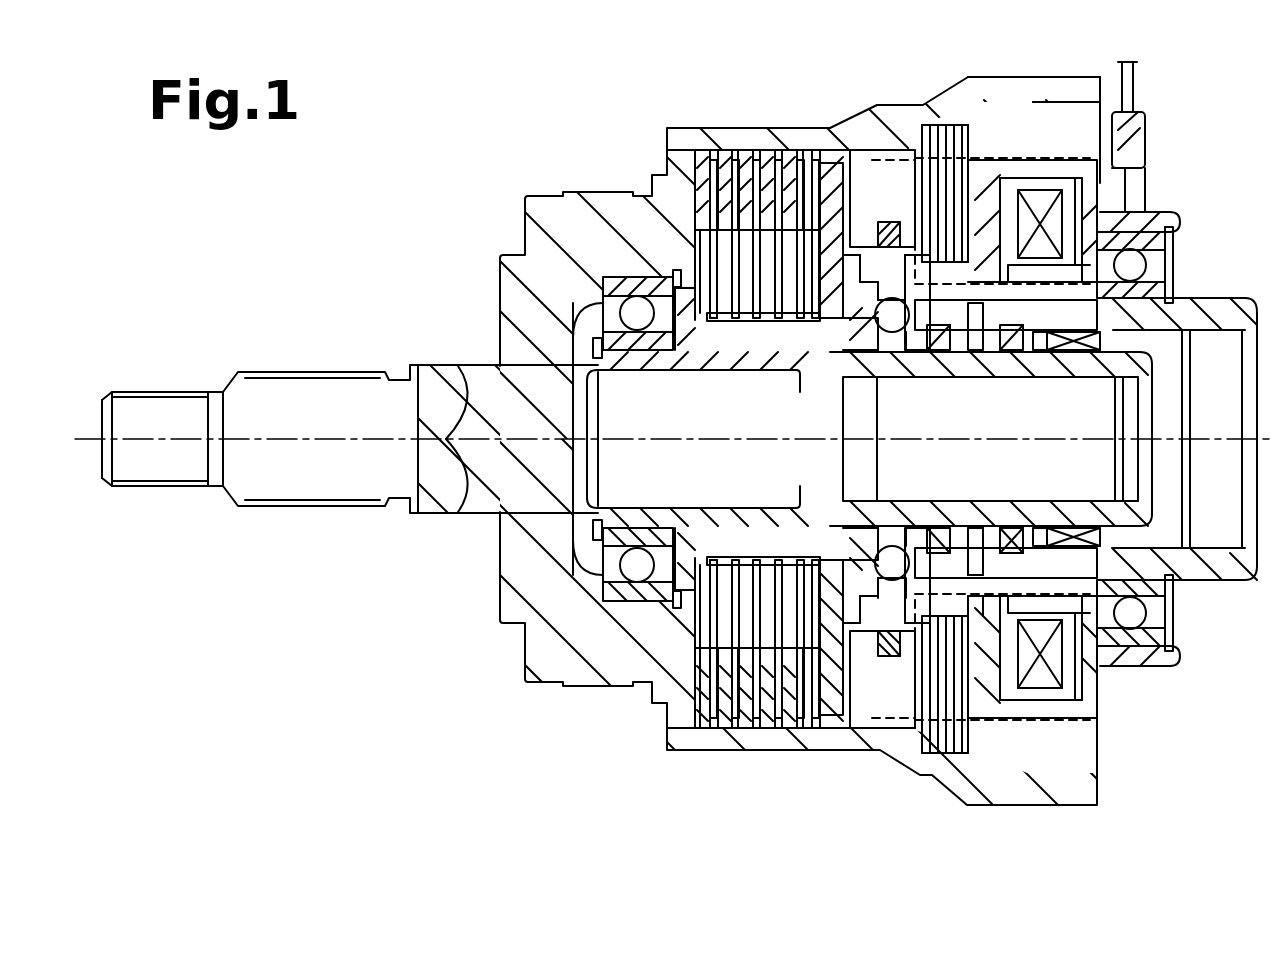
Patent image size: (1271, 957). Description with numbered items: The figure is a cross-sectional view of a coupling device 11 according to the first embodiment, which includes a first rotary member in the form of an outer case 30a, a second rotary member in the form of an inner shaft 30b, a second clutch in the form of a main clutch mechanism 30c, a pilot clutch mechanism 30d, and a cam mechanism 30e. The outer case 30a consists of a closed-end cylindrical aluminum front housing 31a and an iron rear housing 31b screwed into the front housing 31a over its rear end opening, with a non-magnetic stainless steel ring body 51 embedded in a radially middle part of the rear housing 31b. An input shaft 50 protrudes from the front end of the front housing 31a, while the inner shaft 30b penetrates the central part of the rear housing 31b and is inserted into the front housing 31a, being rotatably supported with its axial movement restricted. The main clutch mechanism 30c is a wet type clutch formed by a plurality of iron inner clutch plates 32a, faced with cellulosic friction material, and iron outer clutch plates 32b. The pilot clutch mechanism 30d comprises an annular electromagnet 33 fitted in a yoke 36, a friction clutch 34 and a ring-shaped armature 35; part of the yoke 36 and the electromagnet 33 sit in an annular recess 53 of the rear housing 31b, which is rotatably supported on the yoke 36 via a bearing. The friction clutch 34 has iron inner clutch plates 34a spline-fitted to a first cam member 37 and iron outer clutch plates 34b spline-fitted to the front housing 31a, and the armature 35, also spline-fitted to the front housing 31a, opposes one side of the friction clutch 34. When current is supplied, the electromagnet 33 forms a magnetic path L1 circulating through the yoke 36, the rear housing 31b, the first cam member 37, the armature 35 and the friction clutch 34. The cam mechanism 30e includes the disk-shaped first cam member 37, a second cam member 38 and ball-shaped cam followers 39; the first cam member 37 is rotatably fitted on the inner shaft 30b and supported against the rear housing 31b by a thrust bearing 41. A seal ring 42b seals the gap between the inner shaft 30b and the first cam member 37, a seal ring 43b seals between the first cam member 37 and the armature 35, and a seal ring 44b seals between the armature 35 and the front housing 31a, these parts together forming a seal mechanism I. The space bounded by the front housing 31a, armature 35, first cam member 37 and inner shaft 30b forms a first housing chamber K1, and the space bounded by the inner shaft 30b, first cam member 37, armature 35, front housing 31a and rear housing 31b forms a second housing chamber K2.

The coupling device 11 is at (1167, 100).
The input shaft 50 is at (155, 402).
The front housing 31a is at (540, 196).
The rear housing 31b is at (1076, 100).
The outer case 30a is at (620, 188).
The inner shaft 30b is at (672, 372).
The main clutch mechanism 30c is at (771, 150).
The pilot clutch mechanism 30d is at (1022, 180).
The cam mechanism 30e is at (892, 356).
The inner clutch plates 32a is at (745, 322).
The outer clutch plates 32b is at (717, 150).
The electromagnet 33 is at (1047, 268).
The friction clutch 34 is at (948, 112).
The inner clutch plates 34a is at (988, 276).
The outer clutch plates 34b is at (983, 125).
The armature 35 is at (880, 150).
The yoke 36 is at (1150, 690).
The first cam member 37 is at (919, 382).
The second cam member 38 is at (847, 150).
The cam follower 39 is at (877, 332).
The thrust bearing 41 is at (992, 356).
The seal ring 42b is at (955, 355).
The seal ring 43b is at (888, 222).
The seal ring 44b is at (902, 150).
The ring body 51 is at (980, 587).
The annular recess 53 is at (1080, 607).
The first housing chamber K1 is at (693, 582).
The second housing chamber K2 is at (986, 574).
The magnetic path L1 is at (1127, 183).
The seal mechanism I is at (875, 753).